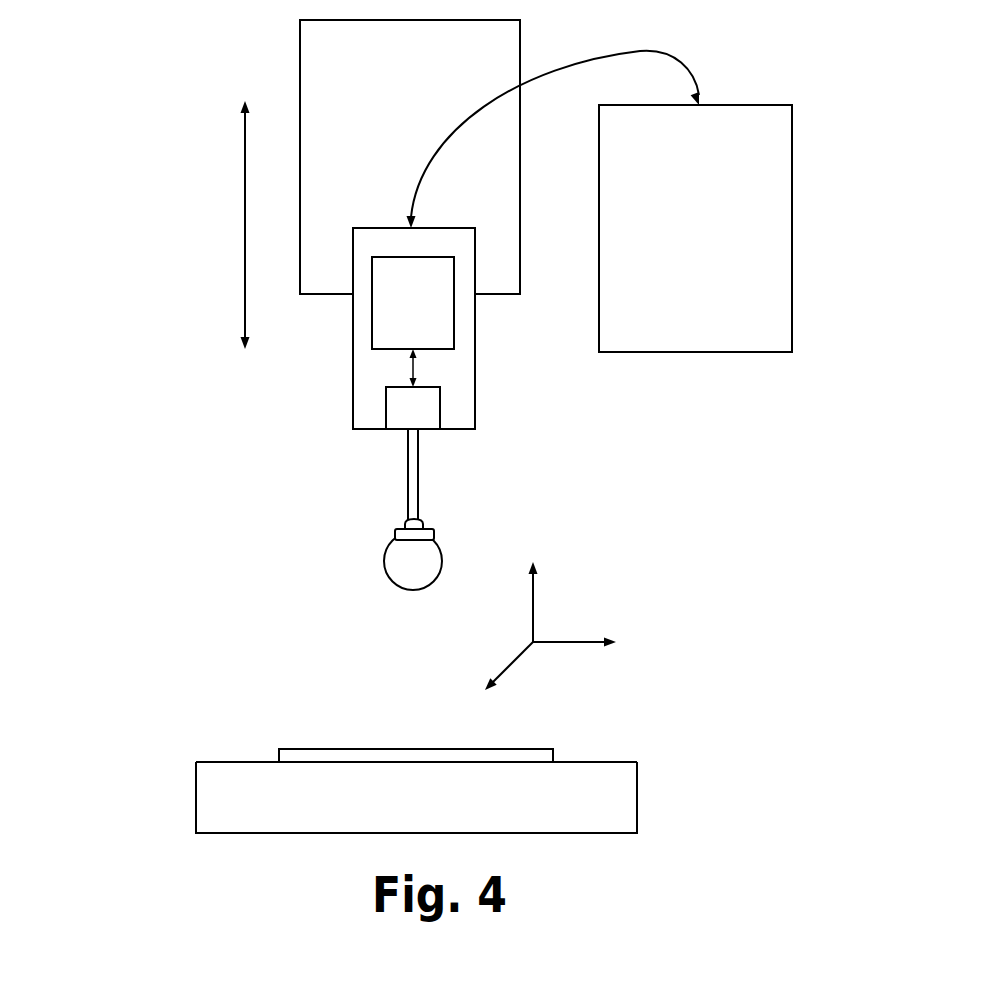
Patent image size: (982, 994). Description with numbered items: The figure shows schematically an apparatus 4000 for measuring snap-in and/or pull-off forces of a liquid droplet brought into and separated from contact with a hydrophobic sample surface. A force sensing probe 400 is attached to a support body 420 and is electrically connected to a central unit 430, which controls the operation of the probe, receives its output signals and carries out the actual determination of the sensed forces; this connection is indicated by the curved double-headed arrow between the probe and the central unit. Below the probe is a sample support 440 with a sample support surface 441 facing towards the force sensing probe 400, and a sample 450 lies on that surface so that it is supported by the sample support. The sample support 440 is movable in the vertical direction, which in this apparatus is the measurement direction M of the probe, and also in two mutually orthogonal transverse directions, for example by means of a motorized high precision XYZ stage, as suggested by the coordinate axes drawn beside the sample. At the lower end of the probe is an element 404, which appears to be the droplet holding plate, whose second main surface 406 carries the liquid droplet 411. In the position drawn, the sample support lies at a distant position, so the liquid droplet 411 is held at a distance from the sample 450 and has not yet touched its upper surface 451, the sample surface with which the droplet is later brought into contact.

The apparatus 4000 is at (162, 159).
The support body 420 is at (300, 85).
The central unit 430 is at (777, 342).
The force sensing probe 400 is at (313, 385).
The liquid droplet 411 is at (445, 562).
The second main surface 406 is at (409, 545).
The stylus holder 404 is at (393, 537).
The sample support 440 is at (637, 797).
The sample support surface 441 is at (218, 760).
The sample 450 is at (312, 755).
The surface 451 is at (523, 748).